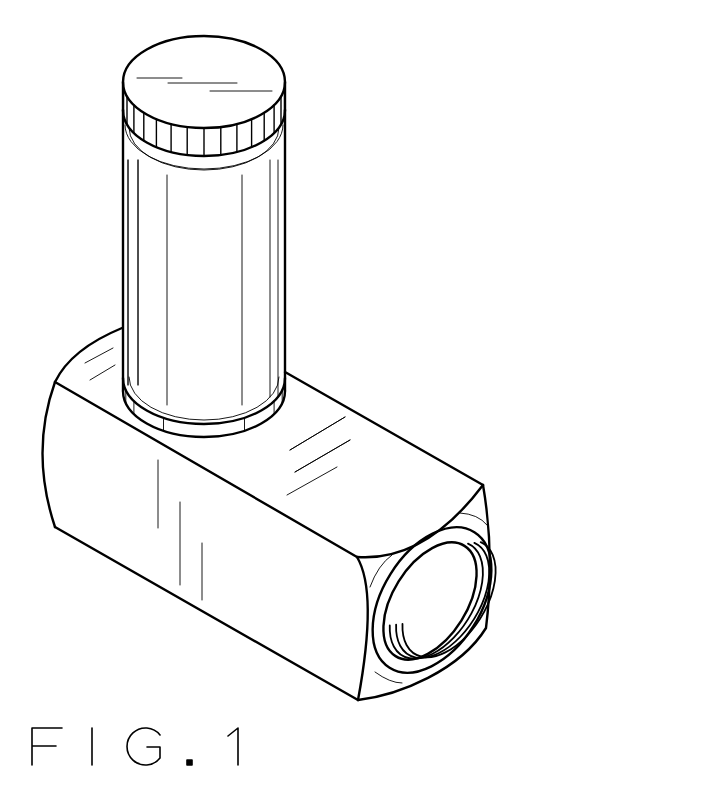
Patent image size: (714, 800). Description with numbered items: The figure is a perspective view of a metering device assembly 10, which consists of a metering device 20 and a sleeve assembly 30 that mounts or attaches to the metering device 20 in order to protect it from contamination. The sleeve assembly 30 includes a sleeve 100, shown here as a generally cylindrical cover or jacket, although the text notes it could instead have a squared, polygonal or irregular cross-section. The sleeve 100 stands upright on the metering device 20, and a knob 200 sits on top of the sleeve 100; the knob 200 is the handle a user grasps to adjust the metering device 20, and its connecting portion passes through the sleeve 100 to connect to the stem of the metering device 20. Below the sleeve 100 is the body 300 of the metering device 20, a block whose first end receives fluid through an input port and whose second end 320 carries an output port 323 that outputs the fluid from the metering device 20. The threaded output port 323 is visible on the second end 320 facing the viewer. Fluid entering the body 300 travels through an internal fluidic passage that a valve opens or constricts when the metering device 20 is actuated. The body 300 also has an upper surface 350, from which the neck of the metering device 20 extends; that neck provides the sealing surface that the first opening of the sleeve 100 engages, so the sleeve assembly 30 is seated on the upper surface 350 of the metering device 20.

The metering device assembly 10 is at (330, 350).
The metering device 20 is at (147, 603).
The sleeve assembly 30 is at (315, 164).
The sleeve 100 is at (215, 273).
The knob 200 is at (232, 63).
The body 300 is at (330, 514).
The second end 320 is at (477, 513).
The output port 323 is at (463, 585).
The upper surface 350 is at (332, 432).